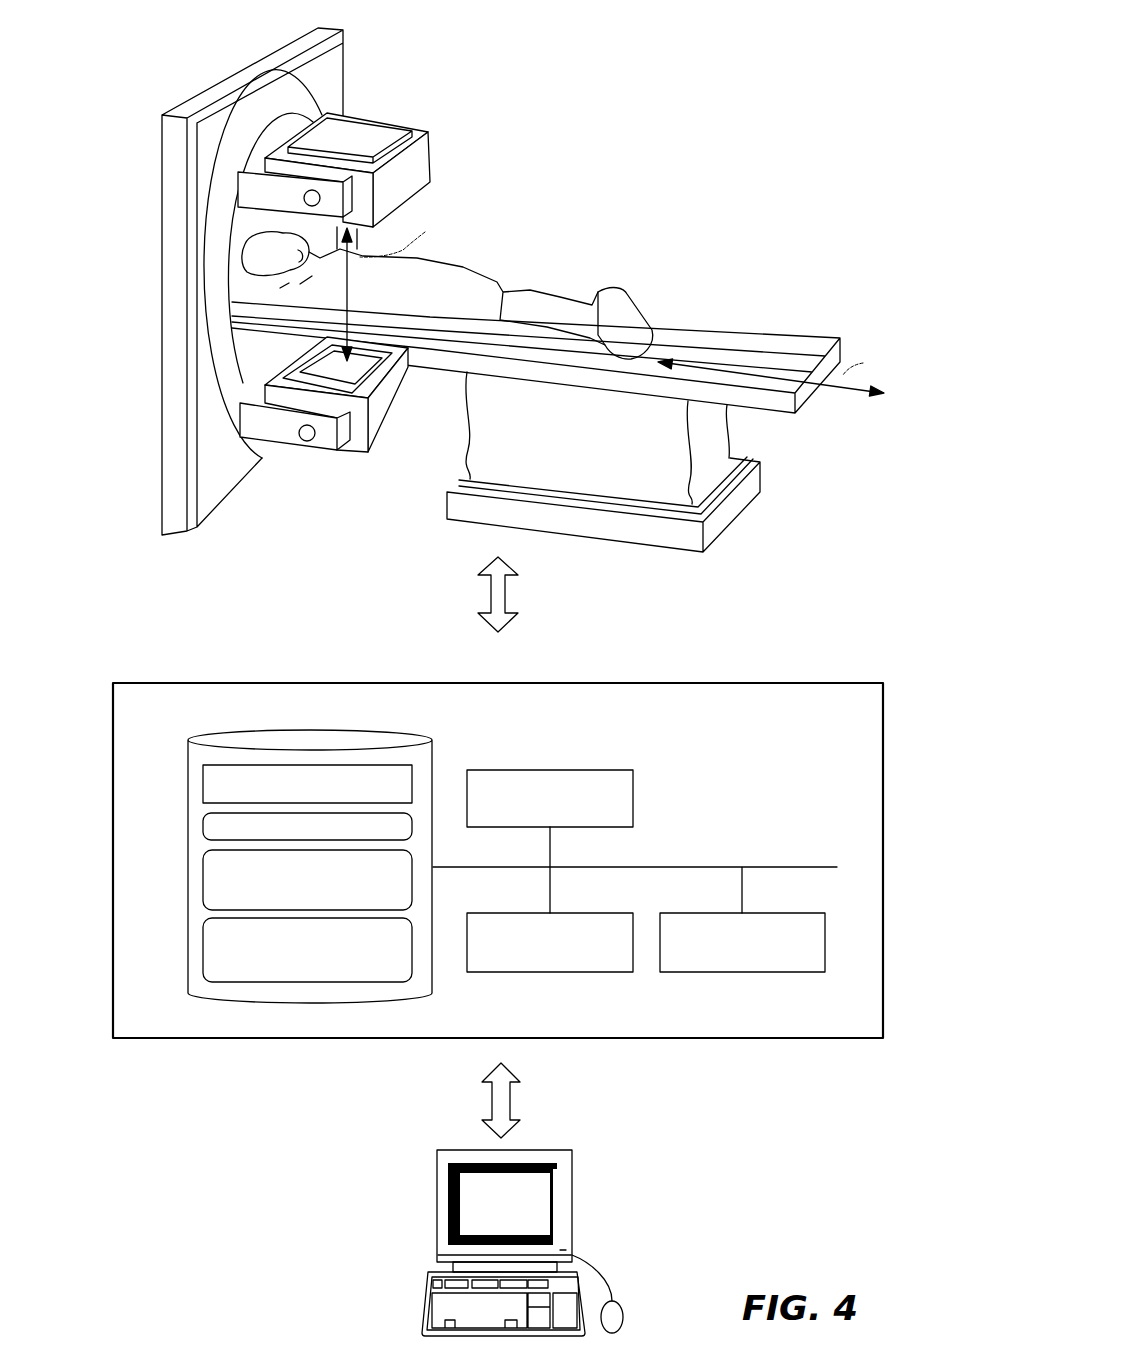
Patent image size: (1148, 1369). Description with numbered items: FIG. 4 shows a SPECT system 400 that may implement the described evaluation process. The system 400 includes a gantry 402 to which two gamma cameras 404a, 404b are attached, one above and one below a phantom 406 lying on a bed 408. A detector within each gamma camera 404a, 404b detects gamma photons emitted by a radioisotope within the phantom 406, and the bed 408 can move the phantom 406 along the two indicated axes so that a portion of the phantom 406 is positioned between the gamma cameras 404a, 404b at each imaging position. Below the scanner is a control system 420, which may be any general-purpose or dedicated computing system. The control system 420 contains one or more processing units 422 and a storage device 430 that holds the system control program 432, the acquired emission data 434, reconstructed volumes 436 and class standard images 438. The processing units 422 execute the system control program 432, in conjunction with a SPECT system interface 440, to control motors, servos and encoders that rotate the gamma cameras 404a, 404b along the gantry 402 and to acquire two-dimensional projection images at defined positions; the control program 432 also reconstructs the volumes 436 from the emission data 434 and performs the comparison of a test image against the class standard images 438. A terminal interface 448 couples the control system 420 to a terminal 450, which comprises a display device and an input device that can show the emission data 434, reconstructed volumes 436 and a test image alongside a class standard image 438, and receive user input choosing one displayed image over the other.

The SPECT system 400 is at (228, 23).
The gantry 402 is at (257, 453).
The gamma camera 404a is at (380, 430).
The gamma camera 404b is at (418, 168).
The phantom 406 is at (548, 303).
The bed 408 is at (637, 320).
The control system 420 is at (848, 710).
The processing units 422 is at (573, 913).
The storage device 430 is at (385, 738).
The system control program 432 is at (200, 785).
The emission data 434 is at (202, 828).
The reconstructed volumes 436 is at (203, 883).
The class standard images 438 is at (203, 960).
The SPECT system interface 440 is at (560, 769).
The terminal interface 448 is at (760, 913).
The terminal 450 is at (624, 1200).